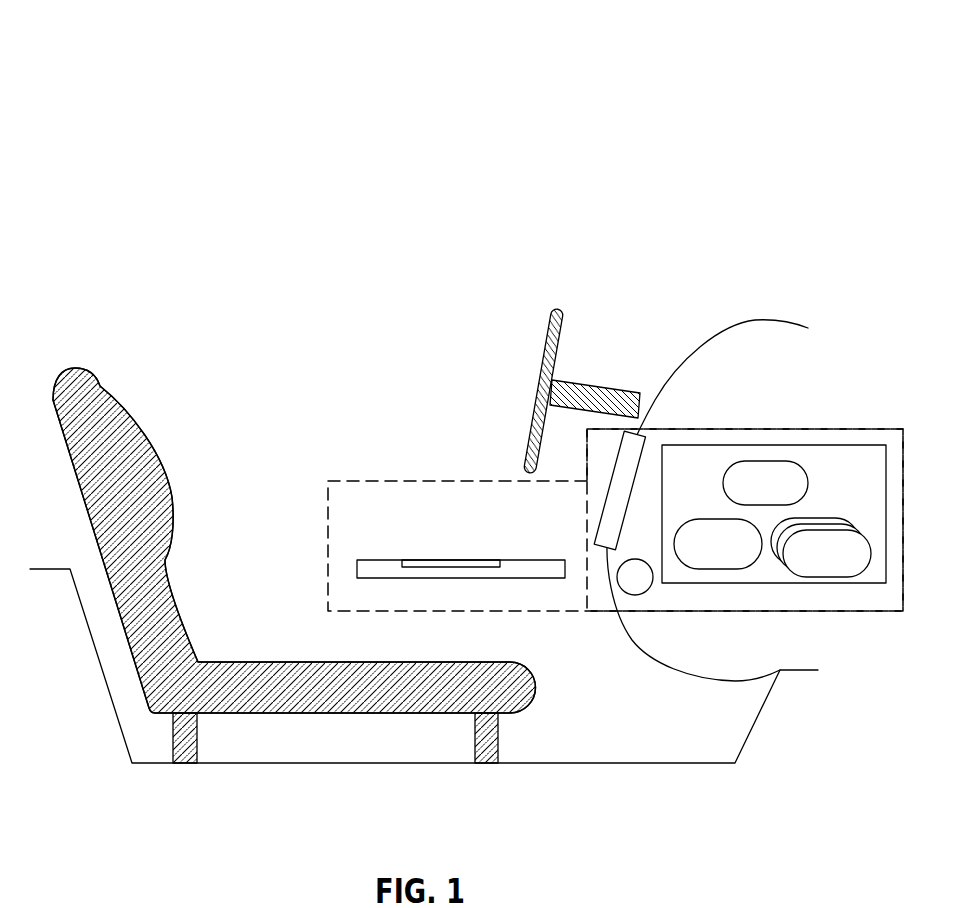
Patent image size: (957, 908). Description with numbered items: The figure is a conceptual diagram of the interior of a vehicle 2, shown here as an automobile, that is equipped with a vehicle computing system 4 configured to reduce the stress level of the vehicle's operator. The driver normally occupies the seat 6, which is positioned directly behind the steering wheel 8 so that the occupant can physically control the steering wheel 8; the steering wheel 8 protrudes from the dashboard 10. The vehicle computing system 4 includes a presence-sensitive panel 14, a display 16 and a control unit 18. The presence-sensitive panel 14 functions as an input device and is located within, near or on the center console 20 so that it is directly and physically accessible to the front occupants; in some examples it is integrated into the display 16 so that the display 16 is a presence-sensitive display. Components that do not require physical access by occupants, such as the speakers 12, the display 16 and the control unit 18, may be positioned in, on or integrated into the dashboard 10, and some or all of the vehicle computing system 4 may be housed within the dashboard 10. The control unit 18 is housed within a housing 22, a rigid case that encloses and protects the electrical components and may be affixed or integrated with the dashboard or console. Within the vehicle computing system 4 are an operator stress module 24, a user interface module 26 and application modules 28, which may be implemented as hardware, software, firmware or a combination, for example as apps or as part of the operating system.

The vehicle 2 is at (805, 98).
The vehicle computing system 4 is at (836, 429).
The seat 6 is at (70, 368).
The steering wheel 8 is at (556, 308).
The dashboard 10 is at (754, 318).
The speakers 12 is at (637, 597).
The presence-sensitive panel 14 is at (452, 558).
The display 16 is at (603, 518).
The control unit 18 is at (696, 473).
The center console 20 is at (550, 580).
The housing 22 is at (768, 444).
The operator stress module 24 is at (730, 555).
The user interface module 26 is at (777, 494).
The application modules 28 is at (839, 564).